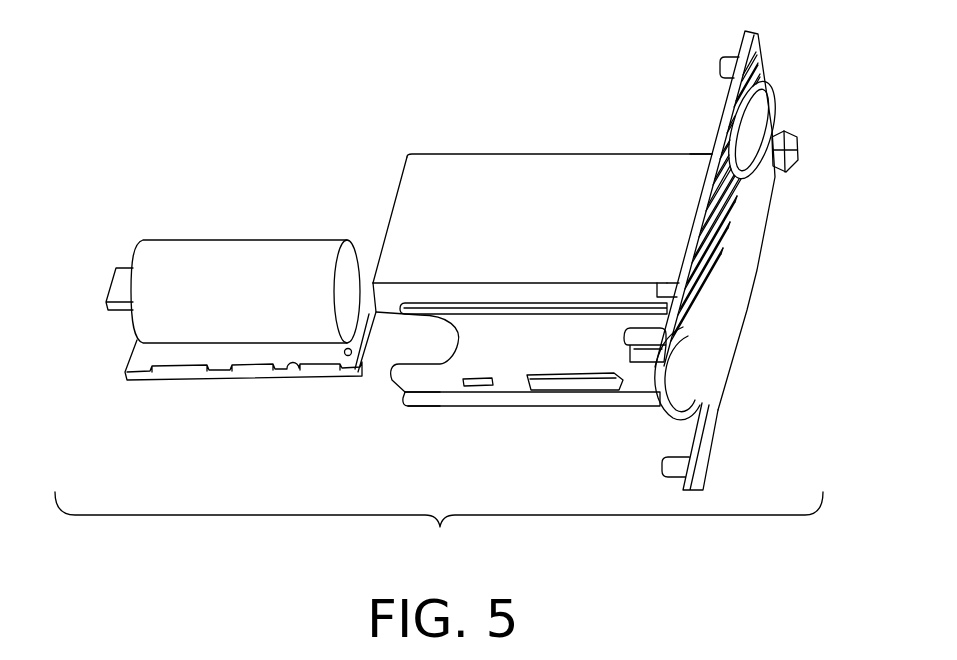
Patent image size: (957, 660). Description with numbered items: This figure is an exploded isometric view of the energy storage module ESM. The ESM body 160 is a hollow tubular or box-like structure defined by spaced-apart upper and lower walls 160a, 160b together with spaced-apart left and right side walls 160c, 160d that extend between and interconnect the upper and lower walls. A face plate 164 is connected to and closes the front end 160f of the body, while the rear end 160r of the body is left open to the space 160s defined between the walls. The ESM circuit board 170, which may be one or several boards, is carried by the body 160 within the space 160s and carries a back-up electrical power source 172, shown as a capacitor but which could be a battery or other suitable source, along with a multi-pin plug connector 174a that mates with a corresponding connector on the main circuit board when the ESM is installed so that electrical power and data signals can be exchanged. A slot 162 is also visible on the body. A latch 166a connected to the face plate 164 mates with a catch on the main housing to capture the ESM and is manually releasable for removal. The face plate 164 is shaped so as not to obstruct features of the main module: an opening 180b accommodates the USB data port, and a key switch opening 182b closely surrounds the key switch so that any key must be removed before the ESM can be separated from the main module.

The ESM body 160 is at (487, 263).
The upper wall 160a is at (487, 153).
The lower wall 160b is at (498, 360).
The left side wall 160c is at (647, 232).
The right side wall 160d is at (407, 393).
The front end of the body 160f is at (683, 134).
The rear end of the body 160r is at (385, 203).
The space 160s is at (422, 338).
The slot 162 is at (533, 328).
The face plate 164 is at (758, 63).
The latch 166a is at (630, 340).
The ESM circuit board 170 is at (140, 360).
The back-up electrical power source 172 is at (243, 258).
The multi-pin plug connector 174a is at (118, 280).
The opening 180b is at (690, 425).
The key switch opening 182b is at (760, 115).
The energy storage module ESM is at (439, 527).